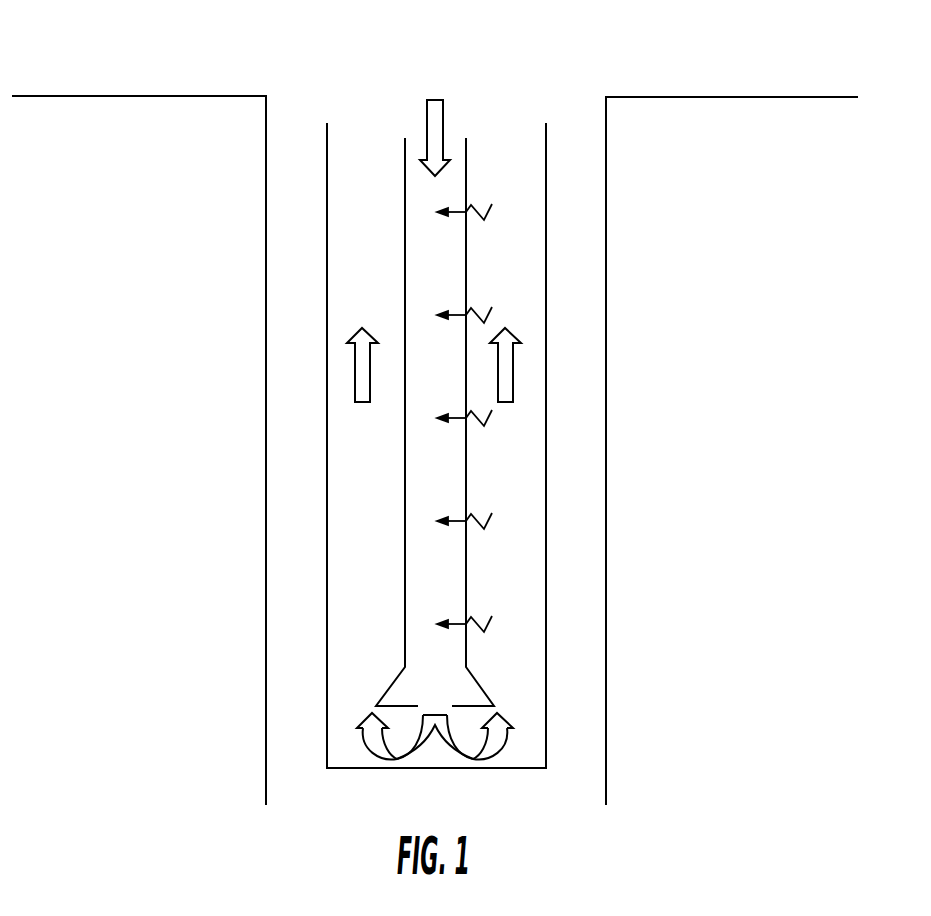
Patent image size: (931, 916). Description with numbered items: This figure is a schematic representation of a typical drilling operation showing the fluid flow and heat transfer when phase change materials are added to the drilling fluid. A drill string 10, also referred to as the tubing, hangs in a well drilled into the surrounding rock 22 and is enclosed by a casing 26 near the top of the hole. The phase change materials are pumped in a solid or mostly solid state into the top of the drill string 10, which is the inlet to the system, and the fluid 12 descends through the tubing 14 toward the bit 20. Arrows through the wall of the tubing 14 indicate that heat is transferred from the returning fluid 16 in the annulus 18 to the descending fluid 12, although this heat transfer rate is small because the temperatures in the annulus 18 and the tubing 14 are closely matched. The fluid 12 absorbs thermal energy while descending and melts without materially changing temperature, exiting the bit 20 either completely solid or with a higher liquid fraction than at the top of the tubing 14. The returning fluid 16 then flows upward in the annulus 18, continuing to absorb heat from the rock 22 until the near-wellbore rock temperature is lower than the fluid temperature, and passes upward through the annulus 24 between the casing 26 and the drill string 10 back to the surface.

The drill string 10 is at (546, 133).
The fluid 12 is at (443, 113).
The tubing 14 is at (466, 278).
The returning fluid 16 is at (513, 377).
The annulus 18 is at (359, 618).
The bit 20 is at (470, 692).
The rock 22 is at (737, 97).
The annulus 24 is at (572, 167).
The casing 26 is at (606, 208).